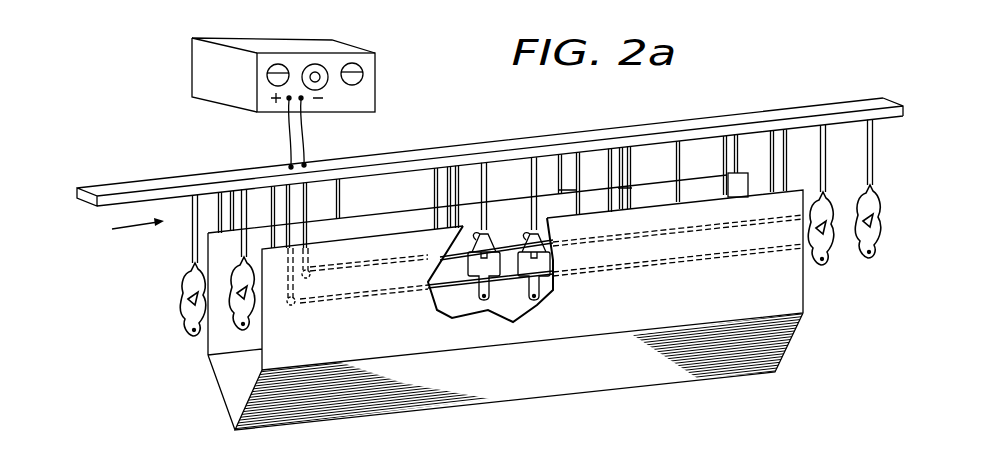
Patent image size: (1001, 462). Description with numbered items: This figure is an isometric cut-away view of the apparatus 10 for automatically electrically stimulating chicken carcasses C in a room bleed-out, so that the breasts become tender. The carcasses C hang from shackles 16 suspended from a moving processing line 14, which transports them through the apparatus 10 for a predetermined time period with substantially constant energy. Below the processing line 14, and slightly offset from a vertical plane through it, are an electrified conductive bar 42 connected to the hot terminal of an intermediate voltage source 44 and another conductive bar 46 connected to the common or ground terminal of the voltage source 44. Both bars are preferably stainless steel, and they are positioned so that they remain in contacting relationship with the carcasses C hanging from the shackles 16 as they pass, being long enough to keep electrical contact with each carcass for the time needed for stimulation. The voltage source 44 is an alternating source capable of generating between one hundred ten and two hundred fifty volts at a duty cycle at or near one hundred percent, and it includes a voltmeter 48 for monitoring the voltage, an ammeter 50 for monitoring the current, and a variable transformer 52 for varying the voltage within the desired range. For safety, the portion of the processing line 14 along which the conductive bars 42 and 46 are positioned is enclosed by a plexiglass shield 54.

The apparatus 10 is at (95, 58).
The processing line 14 is at (878, 98).
The shackles 16 is at (873, 158).
The chicken carcasses C is at (882, 220).
The intermediate voltage source 44 is at (312, 86).
The ammeter 50 is at (279, 64).
The voltmeter 48 is at (352, 64).
The variable transformer 52 is at (330, 86).
The conductive bar 46 is at (498, 254).
The electrified conductive bar 42 is at (446, 288).
The plexiglass shield 54 is at (806, 296).